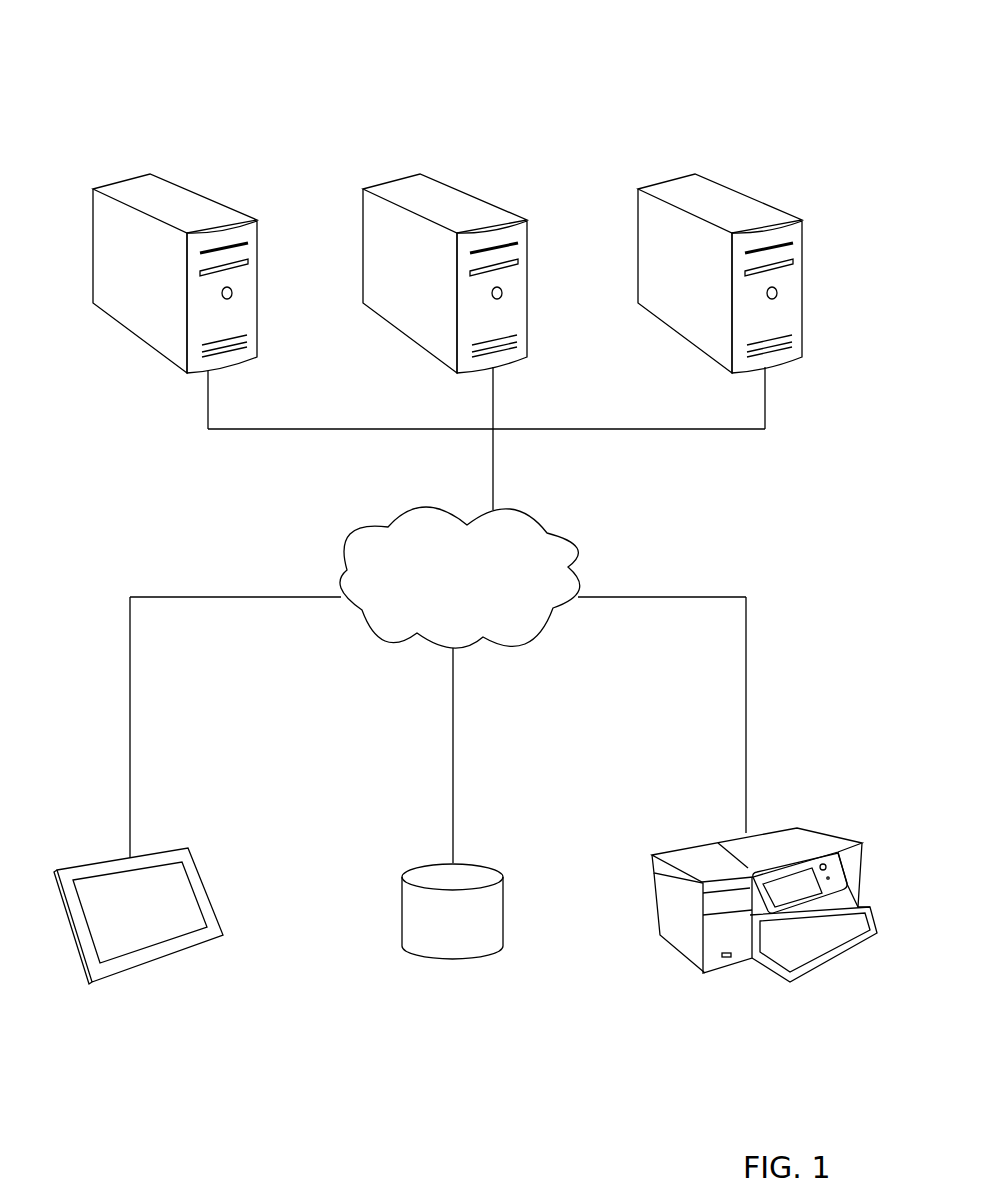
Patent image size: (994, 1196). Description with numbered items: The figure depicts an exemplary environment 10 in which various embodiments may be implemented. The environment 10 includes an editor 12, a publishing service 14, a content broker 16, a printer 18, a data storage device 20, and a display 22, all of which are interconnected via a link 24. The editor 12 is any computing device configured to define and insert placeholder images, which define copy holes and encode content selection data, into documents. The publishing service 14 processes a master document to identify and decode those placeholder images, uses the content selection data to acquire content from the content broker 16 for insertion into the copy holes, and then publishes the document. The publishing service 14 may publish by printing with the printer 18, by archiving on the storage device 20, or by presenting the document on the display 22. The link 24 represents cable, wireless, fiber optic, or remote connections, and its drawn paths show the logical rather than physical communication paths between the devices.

The environment 10 is at (459, 95).
The editor 12 is at (197, 198).
The publishing service 14 is at (467, 196).
The content broker 16 is at (740, 202).
The printer 18 is at (850, 858).
The data storage device 20 is at (493, 897).
The display 22 is at (202, 862).
The link 24 is at (418, 508).